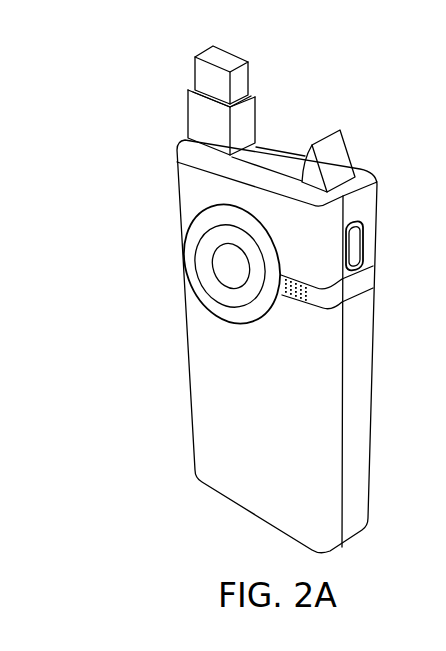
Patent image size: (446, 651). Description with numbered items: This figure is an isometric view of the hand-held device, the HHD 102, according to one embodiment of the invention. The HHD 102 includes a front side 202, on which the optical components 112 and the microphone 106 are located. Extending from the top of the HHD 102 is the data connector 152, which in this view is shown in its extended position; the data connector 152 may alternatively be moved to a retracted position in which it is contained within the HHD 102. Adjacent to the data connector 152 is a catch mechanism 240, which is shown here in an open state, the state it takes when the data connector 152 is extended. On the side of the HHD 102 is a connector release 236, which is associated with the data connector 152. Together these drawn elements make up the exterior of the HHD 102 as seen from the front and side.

The HHD 102 is at (276, 142).
The data connector 152 is at (208, 74).
The catch mechanism 240 is at (335, 152).
The connector release 236 is at (364, 233).
The optical components 112 is at (203, 260).
The microphone 106 is at (330, 308).
The front side 202 is at (216, 350).